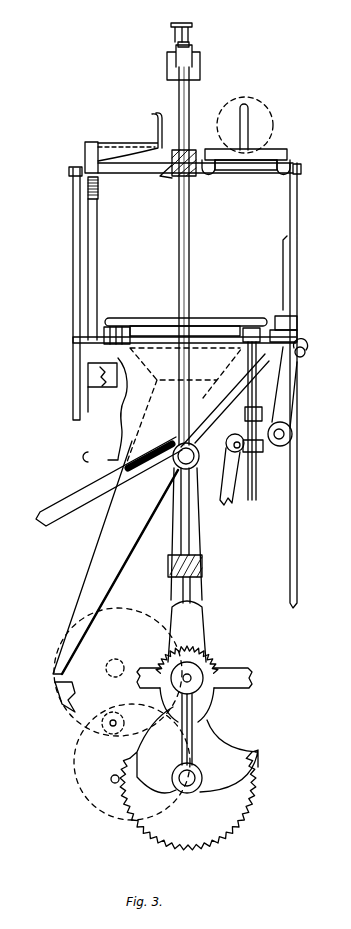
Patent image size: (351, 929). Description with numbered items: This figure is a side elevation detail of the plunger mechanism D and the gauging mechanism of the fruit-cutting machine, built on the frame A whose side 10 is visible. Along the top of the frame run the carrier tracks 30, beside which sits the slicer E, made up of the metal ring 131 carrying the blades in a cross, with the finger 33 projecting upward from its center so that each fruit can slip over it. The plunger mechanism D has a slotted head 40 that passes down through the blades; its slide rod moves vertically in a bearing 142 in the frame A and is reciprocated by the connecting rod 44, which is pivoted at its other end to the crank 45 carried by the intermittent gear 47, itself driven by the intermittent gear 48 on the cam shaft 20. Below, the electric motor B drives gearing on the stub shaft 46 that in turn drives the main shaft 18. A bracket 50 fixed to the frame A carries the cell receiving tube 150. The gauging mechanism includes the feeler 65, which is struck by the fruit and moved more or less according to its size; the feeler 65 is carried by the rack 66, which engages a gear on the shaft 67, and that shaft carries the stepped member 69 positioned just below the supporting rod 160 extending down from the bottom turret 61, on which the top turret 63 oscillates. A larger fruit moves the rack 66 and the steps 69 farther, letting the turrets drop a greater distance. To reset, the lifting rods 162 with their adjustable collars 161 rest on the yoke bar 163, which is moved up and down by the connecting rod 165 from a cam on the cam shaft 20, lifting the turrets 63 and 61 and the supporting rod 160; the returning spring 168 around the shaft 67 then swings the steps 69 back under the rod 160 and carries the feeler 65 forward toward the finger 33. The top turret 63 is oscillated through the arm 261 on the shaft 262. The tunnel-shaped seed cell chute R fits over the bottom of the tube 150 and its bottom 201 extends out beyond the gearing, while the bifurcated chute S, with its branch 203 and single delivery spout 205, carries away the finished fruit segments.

The plunger mechanism D is at (195, 30).
The head 40 is at (193, 65).
The finger 33 is at (247, 118).
The slicer E is at (257, 156).
The metal ring 131 is at (277, 153).
The carrier track 30 is at (273, 172).
The bearing 142 is at (188, 150).
The frame A is at (172, 170).
The rack 66 is at (108, 143).
The feeler 65 is at (157, 123).
The returning spring 168 is at (88, 188).
The shaft 67 is at (92, 255).
The bracket 50 is at (102, 343).
The supporting rod 160 is at (125, 330).
The cell receiving tube 150 is at (198, 333).
The stepped member 69 is at (98, 390).
The top turret 63 is at (250, 318).
The bottom turret 61 is at (275, 318).
The lifting rod 162 is at (265, 421).
The adjustable collar 161 is at (263, 417).
The yoke bar 163 is at (262, 452).
The connecting rod 165 is at (232, 497).
The arm 261 is at (300, 363).
The shaft 262 is at (284, 433).
The branch 203 is at (232, 395).
The bifurcated chute S is at (113, 458).
The delivery spout 205 is at (47, 518).
The bottom of seed cell chute 201 is at (90, 588).
The seed cell chute R is at (100, 545).
The electric motor B is at (65, 697).
The connecting rod 44 is at (198, 537).
The crank 45 is at (200, 635).
The intermittent gear 47 is at (212, 660).
The cam shaft 20 is at (197, 775).
The intermittent gear 48 is at (238, 798).
The side 10 is at (168, 785).
The main shaft 18 is at (112, 782).
The stub shaft 46 is at (117, 720).